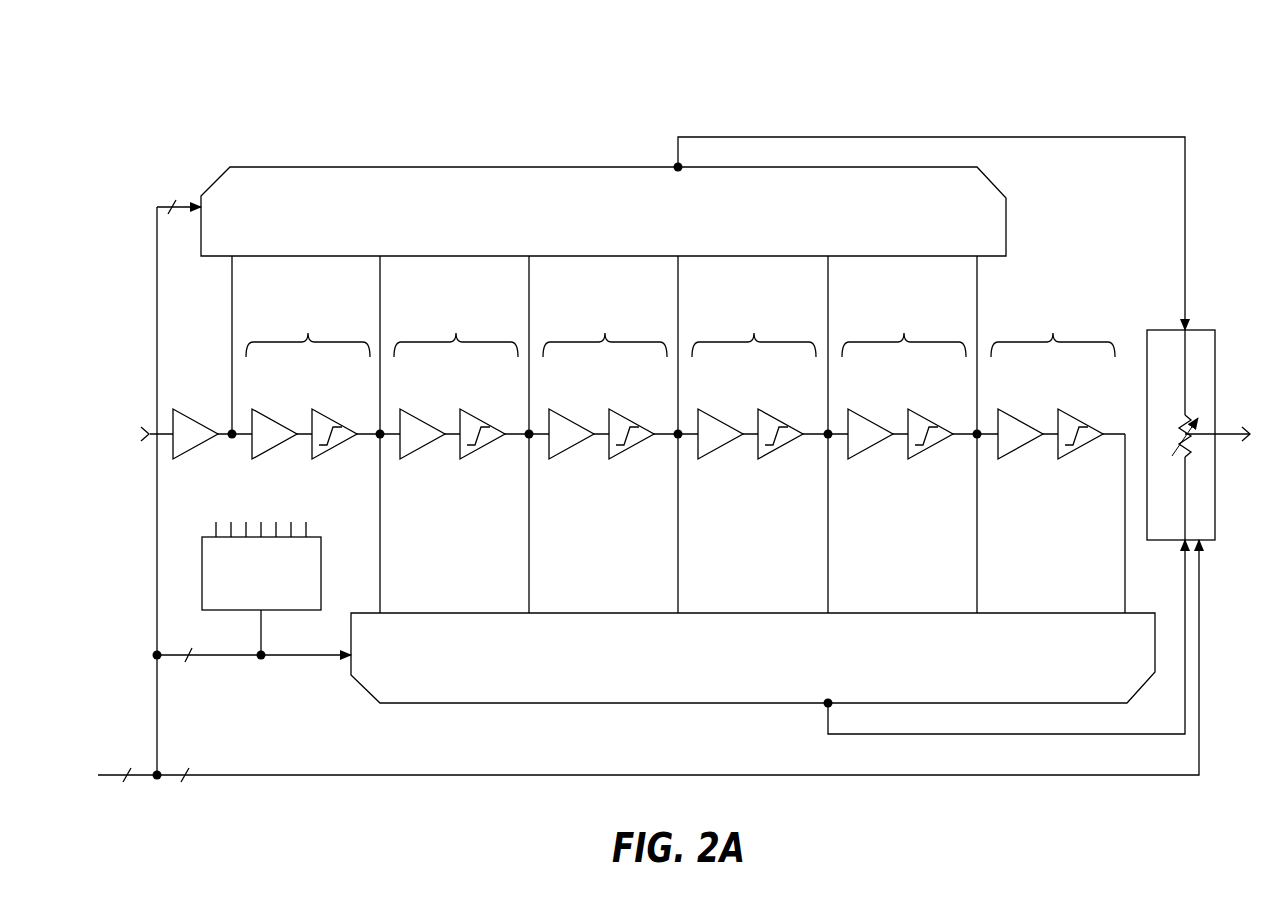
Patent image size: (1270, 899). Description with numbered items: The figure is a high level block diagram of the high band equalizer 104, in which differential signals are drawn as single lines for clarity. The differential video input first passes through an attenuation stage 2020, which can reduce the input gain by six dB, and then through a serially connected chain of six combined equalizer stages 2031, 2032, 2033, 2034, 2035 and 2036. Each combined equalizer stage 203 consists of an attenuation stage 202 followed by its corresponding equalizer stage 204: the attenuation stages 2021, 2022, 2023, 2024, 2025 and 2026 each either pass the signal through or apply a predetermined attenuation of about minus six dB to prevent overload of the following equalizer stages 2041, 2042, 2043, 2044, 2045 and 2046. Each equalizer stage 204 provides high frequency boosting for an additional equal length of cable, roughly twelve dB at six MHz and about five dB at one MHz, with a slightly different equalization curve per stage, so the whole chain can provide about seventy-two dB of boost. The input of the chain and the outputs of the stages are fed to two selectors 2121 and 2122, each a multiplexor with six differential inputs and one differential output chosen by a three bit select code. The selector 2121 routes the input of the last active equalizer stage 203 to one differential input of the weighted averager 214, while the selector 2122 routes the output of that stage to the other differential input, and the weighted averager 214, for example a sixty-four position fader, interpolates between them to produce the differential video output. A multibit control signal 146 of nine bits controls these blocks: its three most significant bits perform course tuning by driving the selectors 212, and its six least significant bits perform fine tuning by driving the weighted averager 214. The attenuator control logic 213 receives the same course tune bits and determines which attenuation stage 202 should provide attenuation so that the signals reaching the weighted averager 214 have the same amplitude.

The high band equalizer 104 is at (180, 51).
The multibit control signal 146 is at (103, 772).
The attenuation stage 202 is at (647, 393).
The attenuation stage 2020 is at (181, 409).
The attenuation stage 2021 is at (260, 409).
The attenuation stage 2022 is at (408, 409).
The attenuation stage 2023 is at (557, 409).
The attenuation stage 2024 is at (706, 409).
The attenuation stage 2025 is at (856, 409).
The attenuation stage 2026 is at (1006, 409).
The equalizer stage 203 is at (647, 393).
The equalizer stage 2031 is at (311, 393).
The equalizer stage 2032 is at (459, 393).
The equalizer stage 2033 is at (608, 393).
The equalizer stage 2034 is at (757, 393).
The equalizer stage 2035 is at (907, 393).
The equalizer stage 2036 is at (1056, 393).
The equalizer stage 204 is at (647, 393).
The equalizer stage 2041 is at (320, 409).
The equalizer stage 2042 is at (468, 409).
The equalizer stage 2043 is at (617, 409).
The equalizer stage 2044 is at (766, 409).
The equalizer stage 2045 is at (916, 409).
The equalizer stage 2046 is at (1066, 409).
The selector 212 is at (678, 440).
The selector 2121 is at (375, 166).
The selector 2122 is at (440, 704).
The attenuator control logic 213 is at (323, 562).
The weighted averager 214 is at (1190, 324).